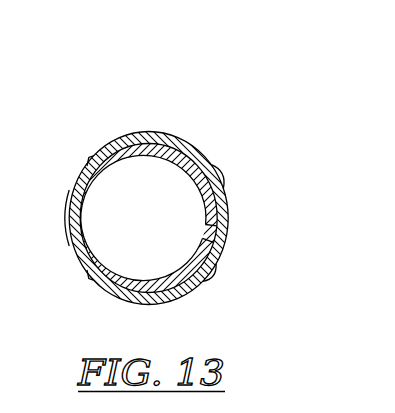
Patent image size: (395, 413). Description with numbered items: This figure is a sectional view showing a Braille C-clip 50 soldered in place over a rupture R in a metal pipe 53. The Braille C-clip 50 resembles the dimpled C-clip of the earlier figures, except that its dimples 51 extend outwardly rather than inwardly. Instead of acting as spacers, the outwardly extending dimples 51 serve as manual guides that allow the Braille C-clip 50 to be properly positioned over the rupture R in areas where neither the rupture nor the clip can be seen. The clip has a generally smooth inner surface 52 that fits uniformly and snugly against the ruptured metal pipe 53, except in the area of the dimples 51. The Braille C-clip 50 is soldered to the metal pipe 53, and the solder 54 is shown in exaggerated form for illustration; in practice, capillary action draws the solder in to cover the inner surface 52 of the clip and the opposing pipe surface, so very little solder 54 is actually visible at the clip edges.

The Braille C-clip 50 is at (180, 132).
The dimples 51 is at (224, 176).
The inner surface 52 is at (130, 154).
The metal pipe 53 is at (70, 232).
The solder 54 is at (89, 160).
The rupture R is at (207, 229).